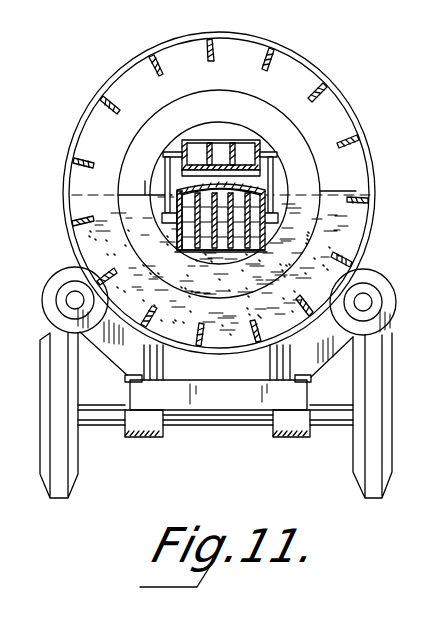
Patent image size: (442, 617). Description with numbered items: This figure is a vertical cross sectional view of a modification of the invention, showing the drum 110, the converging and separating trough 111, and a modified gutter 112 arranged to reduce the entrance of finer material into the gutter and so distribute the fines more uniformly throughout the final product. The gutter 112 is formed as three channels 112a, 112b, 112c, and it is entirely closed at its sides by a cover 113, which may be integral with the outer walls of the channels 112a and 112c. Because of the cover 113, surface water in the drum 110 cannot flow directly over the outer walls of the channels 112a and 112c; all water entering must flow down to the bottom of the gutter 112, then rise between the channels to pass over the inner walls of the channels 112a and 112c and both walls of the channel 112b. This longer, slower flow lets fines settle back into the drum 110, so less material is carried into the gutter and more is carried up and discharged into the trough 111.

The drum 110 is at (232, 182).
The trough 111 is at (257, 143).
The gutter 112 is at (223, 178).
The channel 112a is at (248, 199).
The channel 112b is at (262, 176).
The channel 112c is at (190, 202).
The cover 113 is at (185, 172).